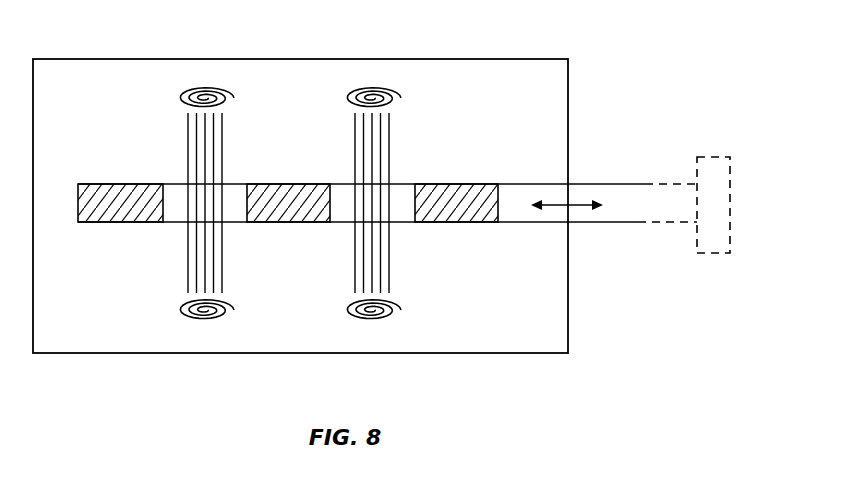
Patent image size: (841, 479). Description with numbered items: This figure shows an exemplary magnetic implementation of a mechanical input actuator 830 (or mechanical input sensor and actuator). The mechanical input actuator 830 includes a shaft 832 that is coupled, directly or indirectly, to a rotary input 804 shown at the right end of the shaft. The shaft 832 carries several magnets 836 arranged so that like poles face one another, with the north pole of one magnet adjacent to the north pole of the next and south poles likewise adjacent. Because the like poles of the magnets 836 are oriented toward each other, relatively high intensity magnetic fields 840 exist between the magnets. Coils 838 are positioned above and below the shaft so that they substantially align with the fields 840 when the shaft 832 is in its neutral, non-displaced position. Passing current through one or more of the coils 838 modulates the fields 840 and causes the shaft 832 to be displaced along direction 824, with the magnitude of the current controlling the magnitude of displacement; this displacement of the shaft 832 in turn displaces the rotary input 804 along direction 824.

The mechanical input actuator 830 is at (298, 59).
The shaft 832 is at (519, 224).
The magnets 836 is at (115, 184).
The coils 838 is at (207, 86).
The magnetic fields 840 is at (181, 253).
The direction 824 is at (580, 205).
The rotary input 804 is at (707, 157).